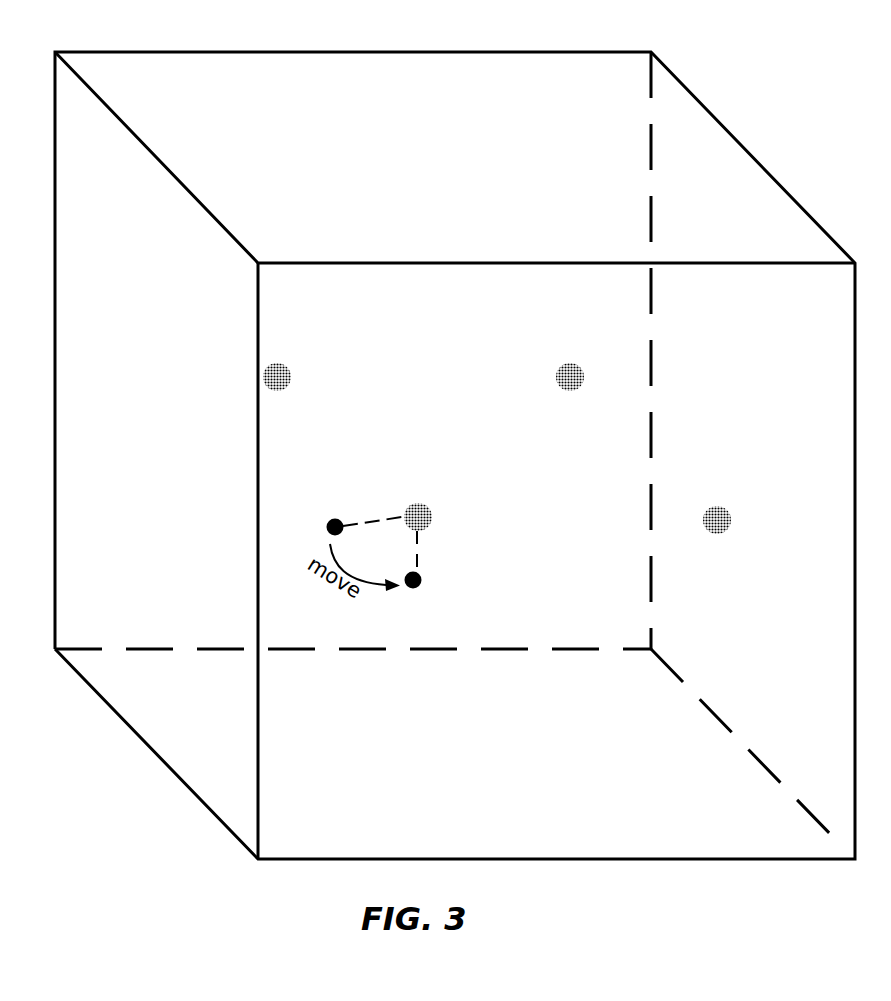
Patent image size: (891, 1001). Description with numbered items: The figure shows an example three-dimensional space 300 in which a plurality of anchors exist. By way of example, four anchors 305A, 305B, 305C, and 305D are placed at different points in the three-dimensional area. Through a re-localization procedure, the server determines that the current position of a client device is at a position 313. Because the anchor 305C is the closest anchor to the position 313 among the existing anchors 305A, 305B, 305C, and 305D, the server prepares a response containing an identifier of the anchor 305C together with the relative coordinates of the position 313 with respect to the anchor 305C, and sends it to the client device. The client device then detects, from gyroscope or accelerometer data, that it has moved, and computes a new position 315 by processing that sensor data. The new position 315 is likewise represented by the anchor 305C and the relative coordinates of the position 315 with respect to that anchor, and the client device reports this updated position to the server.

The three-dimensional space 300 is at (456, 30).
The anchor 305A is at (290, 382).
The anchor 305B is at (557, 380).
The anchor 305C is at (433, 522).
The anchor 305D is at (726, 530).
The position 313 is at (334, 518).
The new position 315 is at (419, 587).